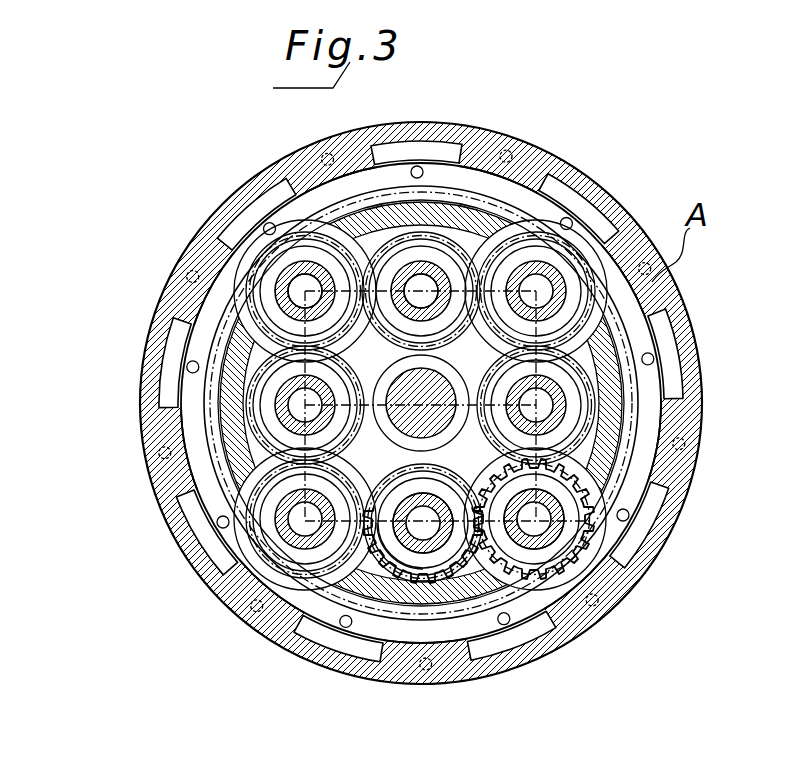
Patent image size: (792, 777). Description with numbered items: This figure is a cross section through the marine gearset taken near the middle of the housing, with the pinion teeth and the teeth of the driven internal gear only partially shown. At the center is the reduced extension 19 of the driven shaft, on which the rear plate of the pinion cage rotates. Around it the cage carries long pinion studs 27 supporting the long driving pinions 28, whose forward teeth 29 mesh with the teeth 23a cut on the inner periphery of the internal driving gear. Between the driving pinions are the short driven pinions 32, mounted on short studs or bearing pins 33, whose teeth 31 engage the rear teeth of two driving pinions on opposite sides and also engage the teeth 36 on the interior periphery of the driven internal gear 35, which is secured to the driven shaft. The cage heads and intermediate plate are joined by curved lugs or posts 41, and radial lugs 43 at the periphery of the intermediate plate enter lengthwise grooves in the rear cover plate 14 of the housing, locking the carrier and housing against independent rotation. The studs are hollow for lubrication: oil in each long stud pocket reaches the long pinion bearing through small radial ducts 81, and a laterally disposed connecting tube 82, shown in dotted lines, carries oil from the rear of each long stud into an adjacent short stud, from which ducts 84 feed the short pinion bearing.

The rear section or cover plate 14 is at (527, 153).
The extension 19 is at (435, 418).
The teeth 23a is at (437, 583).
The long pinion studs 27 is at (293, 400).
The pinions 28 is at (410, 570).
The teeth 29 is at (398, 583).
The teeth 31 is at (593, 540).
The short pinions 32 is at (577, 520).
The short studs or bearing pins 33 is at (283, 532).
The driven internal gear 35 is at (625, 292).
The teeth 36 is at (580, 553).
The curved lugs or posts 41 is at (620, 410).
The radial lugs 43 is at (443, 148).
The radial ducts 81 is at (440, 305).
The connecting tube 82 is at (345, 238).
The ducts 84 is at (325, 300).